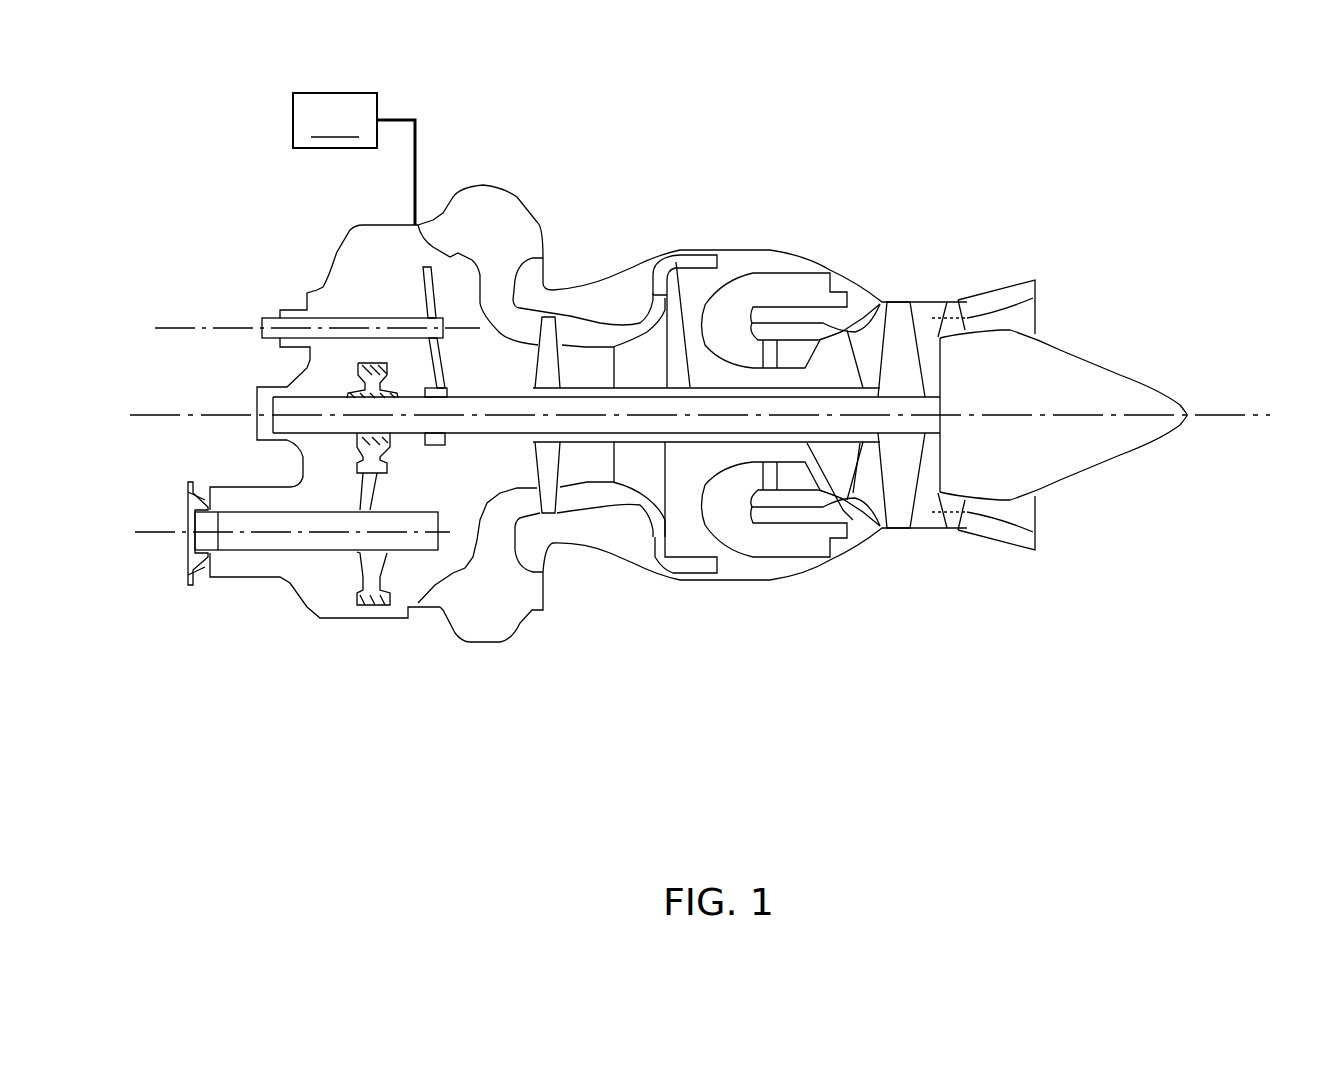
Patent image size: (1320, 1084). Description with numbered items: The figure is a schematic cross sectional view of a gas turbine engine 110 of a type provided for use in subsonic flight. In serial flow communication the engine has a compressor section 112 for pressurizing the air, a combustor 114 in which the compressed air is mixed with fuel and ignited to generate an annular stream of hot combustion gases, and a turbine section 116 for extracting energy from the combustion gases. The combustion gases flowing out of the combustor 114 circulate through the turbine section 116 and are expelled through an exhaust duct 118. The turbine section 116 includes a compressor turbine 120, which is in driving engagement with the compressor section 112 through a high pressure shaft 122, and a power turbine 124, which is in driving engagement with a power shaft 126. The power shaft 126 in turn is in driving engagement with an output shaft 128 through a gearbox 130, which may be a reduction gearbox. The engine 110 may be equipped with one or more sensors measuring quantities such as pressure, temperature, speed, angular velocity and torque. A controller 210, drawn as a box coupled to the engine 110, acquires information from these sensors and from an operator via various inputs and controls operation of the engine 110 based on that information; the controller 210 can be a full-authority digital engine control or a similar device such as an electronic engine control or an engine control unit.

The gas turbine engine 110 is at (1074, 178).
The compressor section 112 is at (640, 357).
The combustor 114 is at (777, 300).
The turbine section 116 is at (868, 477).
The exhaust duct 118 is at (1033, 300).
The compressor turbine 120 is at (837, 477).
The high pressure shaft 122 is at (692, 250).
The power turbine 124 is at (899, 322).
The power shaft 126 is at (473, 437).
The output shaft 128 is at (257, 540).
The gearbox 130 is at (411, 474).
The controller 210 is at (354, 159).